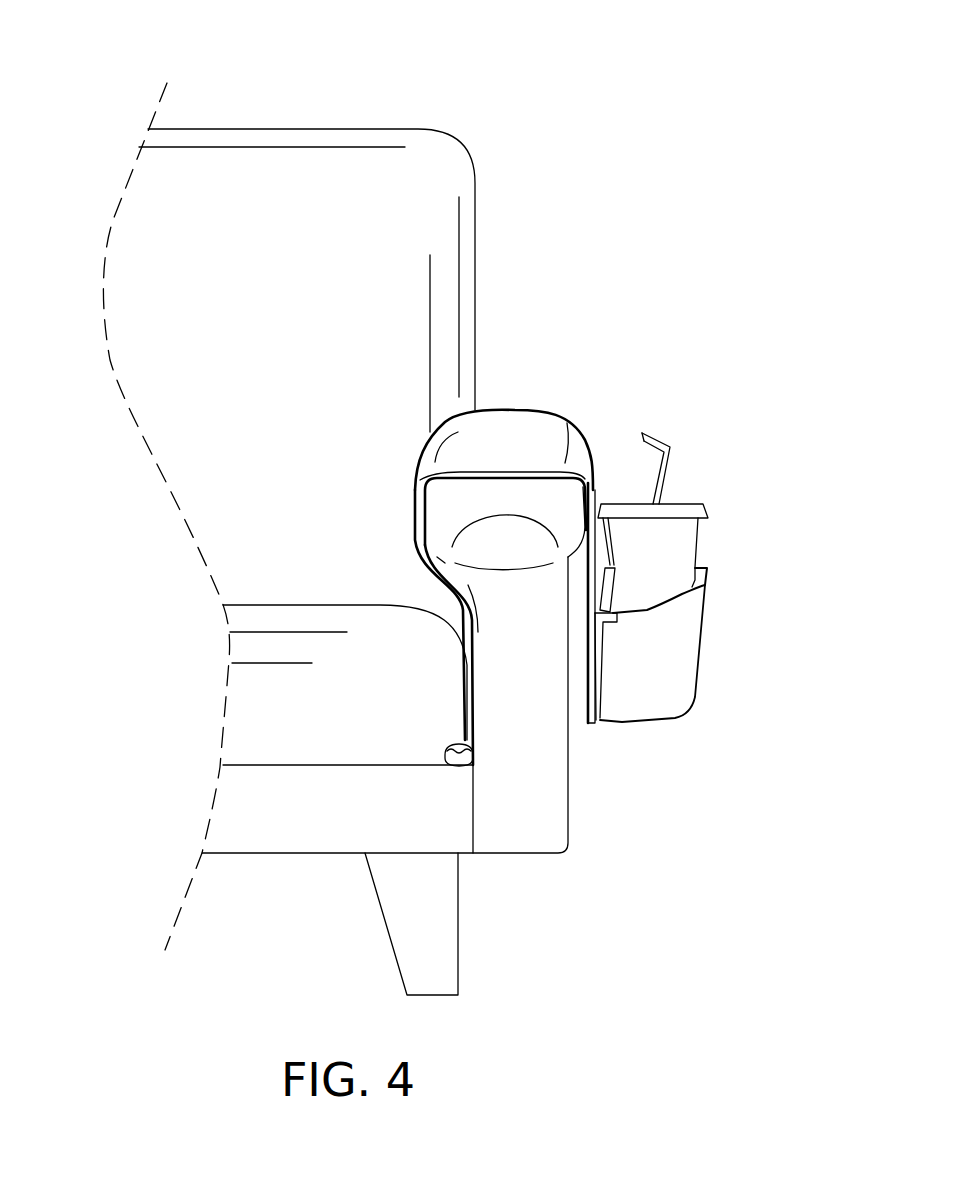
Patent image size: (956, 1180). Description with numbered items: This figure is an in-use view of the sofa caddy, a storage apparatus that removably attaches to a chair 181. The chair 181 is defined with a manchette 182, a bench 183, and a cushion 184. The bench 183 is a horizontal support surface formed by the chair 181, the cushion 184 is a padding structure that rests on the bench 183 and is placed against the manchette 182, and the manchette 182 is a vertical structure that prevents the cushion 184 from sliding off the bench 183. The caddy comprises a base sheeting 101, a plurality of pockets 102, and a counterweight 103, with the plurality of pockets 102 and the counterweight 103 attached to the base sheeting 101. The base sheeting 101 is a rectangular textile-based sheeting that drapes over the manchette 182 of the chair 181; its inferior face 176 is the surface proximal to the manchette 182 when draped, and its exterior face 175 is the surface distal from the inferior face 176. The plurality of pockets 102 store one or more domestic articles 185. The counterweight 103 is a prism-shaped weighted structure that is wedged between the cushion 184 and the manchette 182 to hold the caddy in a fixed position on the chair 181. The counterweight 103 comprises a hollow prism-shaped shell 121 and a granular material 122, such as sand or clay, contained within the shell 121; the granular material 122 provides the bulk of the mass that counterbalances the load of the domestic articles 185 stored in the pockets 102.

The chair 181 is at (333, 129).
The base sheeting 101 is at (483, 480).
The inferior face 176 is at (524, 470).
The exterior face 175 is at (510, 480).
The manchette 182 is at (528, 723).
The bench 183 is at (250, 766).
The cushion 184 is at (313, 625).
The shell 121 is at (455, 744).
The granular material 122 is at (458, 768).
The counterweight 103 is at (438, 767).
The domestic articles 185 is at (652, 540).
The plurality of pockets 102 is at (672, 655).